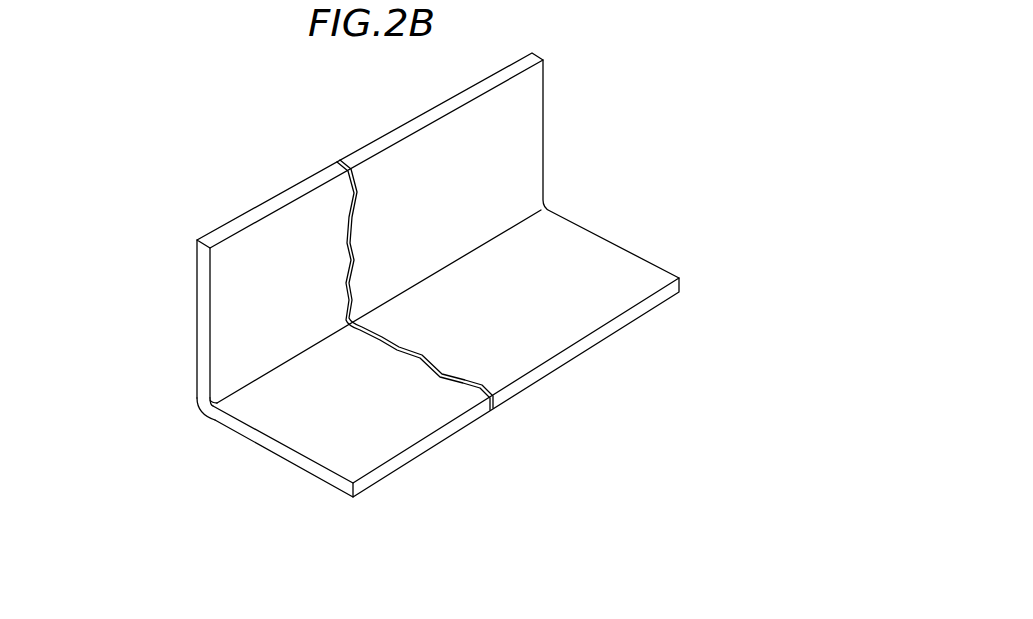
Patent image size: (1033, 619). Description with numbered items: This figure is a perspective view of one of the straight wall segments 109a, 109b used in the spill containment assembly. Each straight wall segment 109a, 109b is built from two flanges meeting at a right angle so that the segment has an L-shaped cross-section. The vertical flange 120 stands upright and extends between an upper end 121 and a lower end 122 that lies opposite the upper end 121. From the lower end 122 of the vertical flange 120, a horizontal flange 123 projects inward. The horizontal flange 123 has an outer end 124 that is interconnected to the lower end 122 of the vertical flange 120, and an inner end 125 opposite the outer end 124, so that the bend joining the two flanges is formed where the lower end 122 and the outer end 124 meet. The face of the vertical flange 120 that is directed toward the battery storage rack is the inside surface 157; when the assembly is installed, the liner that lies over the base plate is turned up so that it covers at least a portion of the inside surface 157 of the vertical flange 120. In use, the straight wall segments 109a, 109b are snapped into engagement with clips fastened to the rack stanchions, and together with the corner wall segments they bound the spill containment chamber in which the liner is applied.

The straight wall segment 109a is at (367, 268).
The straight wall segment 109b is at (263, 101).
The vertical flange 120 is at (486, 132).
The upper end 121 is at (265, 212).
The lower end 122 is at (196, 404).
The horizontal flange 123 is at (515, 317).
The outer end 124 is at (196, 412).
The inner end 125 is at (437, 433).
The inside surface 157 is at (469, 197).